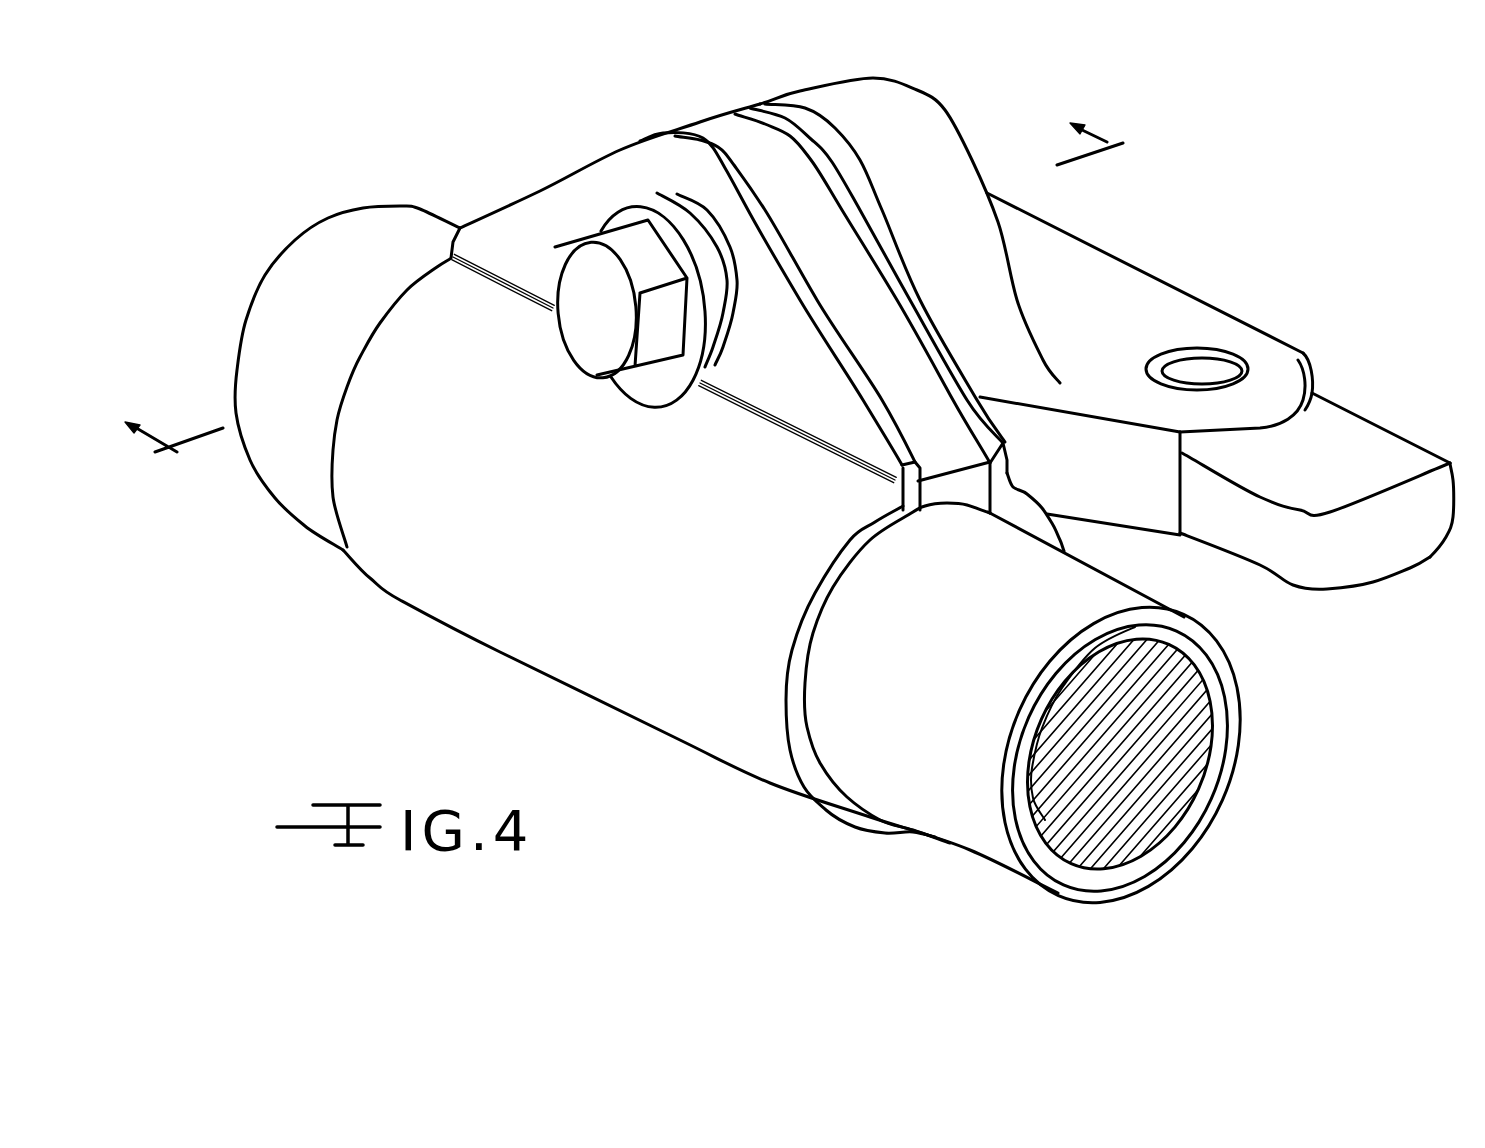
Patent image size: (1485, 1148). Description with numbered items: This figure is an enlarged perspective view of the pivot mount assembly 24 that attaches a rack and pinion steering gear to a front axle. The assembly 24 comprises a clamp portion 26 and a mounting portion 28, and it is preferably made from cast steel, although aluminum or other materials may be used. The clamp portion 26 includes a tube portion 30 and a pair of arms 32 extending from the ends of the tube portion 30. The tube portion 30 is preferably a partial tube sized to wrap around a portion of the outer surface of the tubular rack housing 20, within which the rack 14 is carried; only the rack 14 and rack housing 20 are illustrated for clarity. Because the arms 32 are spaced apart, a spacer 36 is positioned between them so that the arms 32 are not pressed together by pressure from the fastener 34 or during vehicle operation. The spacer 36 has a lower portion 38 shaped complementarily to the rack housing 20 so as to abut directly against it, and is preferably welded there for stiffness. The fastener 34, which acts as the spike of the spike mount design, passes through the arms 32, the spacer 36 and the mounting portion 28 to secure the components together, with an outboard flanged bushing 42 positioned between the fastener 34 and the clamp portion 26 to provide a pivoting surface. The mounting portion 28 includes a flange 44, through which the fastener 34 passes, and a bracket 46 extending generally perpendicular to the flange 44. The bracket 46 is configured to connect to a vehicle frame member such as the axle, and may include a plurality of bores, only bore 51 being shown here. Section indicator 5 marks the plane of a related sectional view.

The section line 5- 5 is at (633, 303).
The rack 14 is at (1087, 877).
The rack housing 20 is at (937, 837).
The pivot mount assembly 24 is at (358, 155).
The clamp portion 26 is at (455, 670).
The mounting portion 28 is at (1254, 302).
The tube portion 30 is at (713, 743).
The arms 32 is at (522, 215).
The fastener 34 is at (617, 350).
The spacer 36 is at (740, 153).
The lower portion 38 is at (947, 503).
The outboard flanged bushing 42 is at (737, 333).
The flange 44 is at (953, 157).
The bracket 46 is at (1063, 257).
The bore 51 is at (1243, 377).